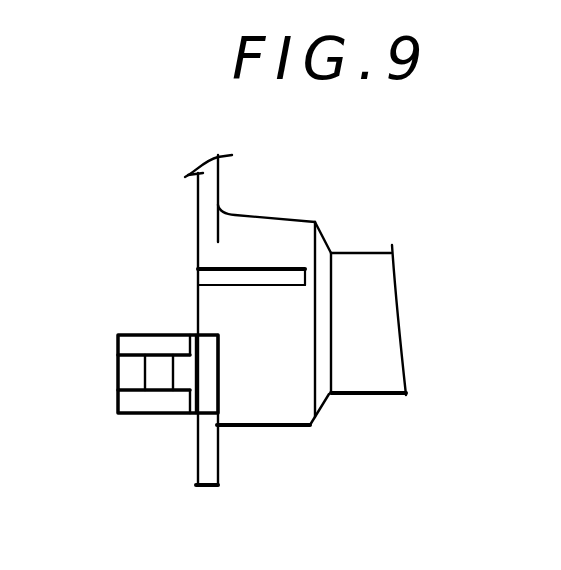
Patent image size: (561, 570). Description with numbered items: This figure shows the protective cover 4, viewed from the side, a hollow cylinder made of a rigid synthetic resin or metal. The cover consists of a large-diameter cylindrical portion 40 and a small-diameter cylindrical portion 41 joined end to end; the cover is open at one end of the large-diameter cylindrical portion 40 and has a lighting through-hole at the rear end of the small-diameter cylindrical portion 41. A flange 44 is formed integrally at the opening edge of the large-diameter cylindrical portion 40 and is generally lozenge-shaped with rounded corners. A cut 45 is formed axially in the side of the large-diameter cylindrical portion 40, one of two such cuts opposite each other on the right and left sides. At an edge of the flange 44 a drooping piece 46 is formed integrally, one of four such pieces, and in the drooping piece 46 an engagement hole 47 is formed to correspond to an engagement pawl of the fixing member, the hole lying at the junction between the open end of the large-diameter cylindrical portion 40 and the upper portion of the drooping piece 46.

The protective cover 4 is at (353, 400).
The large-diameter cylindrical portion 40 is at (292, 427).
The small-diameter cylindrical portion 41 is at (390, 397).
The flange 44 is at (203, 184).
The cut 45 is at (203, 275).
The drooping piece 46 is at (172, 405).
The engagement hole 47 is at (158, 388).